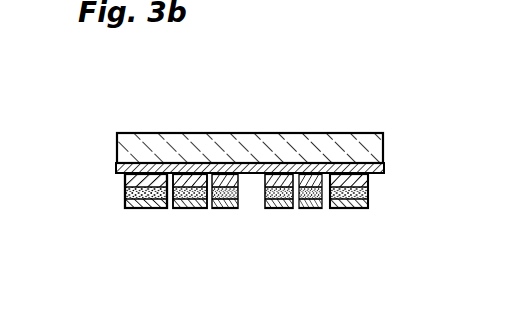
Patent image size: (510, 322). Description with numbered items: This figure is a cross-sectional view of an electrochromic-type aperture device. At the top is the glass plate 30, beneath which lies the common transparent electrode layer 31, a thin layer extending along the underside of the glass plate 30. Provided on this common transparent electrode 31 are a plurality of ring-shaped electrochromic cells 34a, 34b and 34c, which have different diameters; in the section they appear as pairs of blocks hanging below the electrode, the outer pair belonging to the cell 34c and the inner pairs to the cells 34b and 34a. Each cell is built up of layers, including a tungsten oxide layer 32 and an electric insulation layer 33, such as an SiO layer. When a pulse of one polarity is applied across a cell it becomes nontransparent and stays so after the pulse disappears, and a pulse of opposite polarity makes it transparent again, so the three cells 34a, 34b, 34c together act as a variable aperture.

The glass plate 30 is at (127, 145).
The transparent electrode layer 31 is at (124, 168).
The tungsten oxide layer 32 is at (126, 182).
The electric insulation layer 33 is at (127, 196).
The ring-shaped electrochromic cell 34a is at (227, 209).
The ring-shaped electrochromic cell 34b is at (192, 209).
The ring-shaped electrochromic cell 34c is at (128, 209).